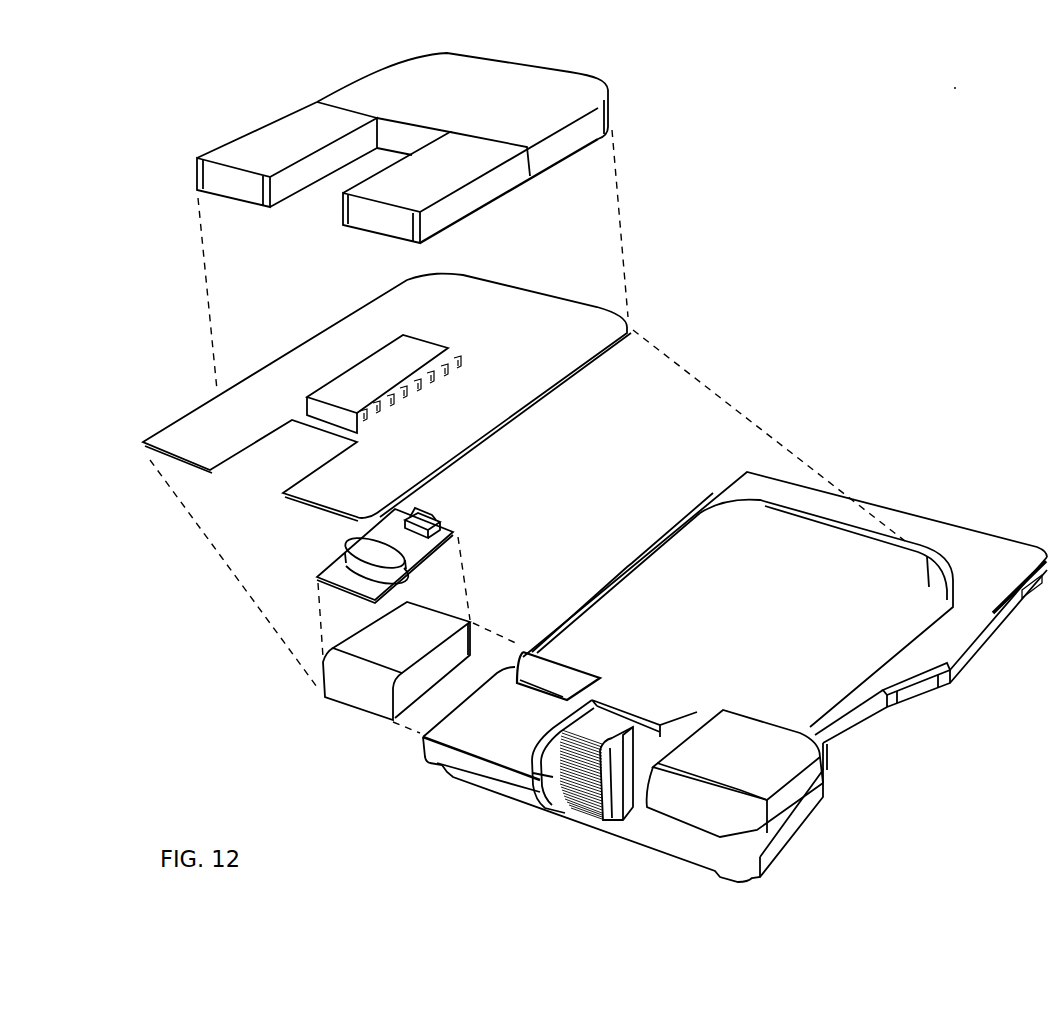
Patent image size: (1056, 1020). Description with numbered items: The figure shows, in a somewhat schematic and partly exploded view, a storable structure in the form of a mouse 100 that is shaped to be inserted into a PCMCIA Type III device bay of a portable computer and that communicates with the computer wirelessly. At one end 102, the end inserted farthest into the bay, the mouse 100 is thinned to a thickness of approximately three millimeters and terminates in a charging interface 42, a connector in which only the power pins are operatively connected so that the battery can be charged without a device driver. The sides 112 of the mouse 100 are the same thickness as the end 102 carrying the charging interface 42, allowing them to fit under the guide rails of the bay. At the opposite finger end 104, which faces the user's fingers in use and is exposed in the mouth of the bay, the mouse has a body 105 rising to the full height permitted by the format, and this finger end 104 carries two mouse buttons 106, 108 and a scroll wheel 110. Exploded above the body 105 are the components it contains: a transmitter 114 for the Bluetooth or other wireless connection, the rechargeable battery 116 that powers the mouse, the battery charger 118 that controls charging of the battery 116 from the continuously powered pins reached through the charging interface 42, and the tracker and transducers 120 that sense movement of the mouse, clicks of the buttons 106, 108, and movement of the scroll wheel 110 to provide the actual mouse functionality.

The mouse 100 is at (303, 68).
The transmitter 114 is at (318, 145).
The rechargeable battery 116 is at (465, 101).
The battery charger 118 is at (476, 171).
The tracker and transducers 120 is at (368, 384).
The mouse button 108 is at (358, 682).
The finger end 104 is at (472, 773).
The scroll wheel 110 is at (575, 785).
The mouse button 106 is at (683, 805).
The end 102 is at (851, 515).
The body 105 is at (760, 620).
The sides 112 is at (942, 652).
The charging interface 42 is at (1047, 553).